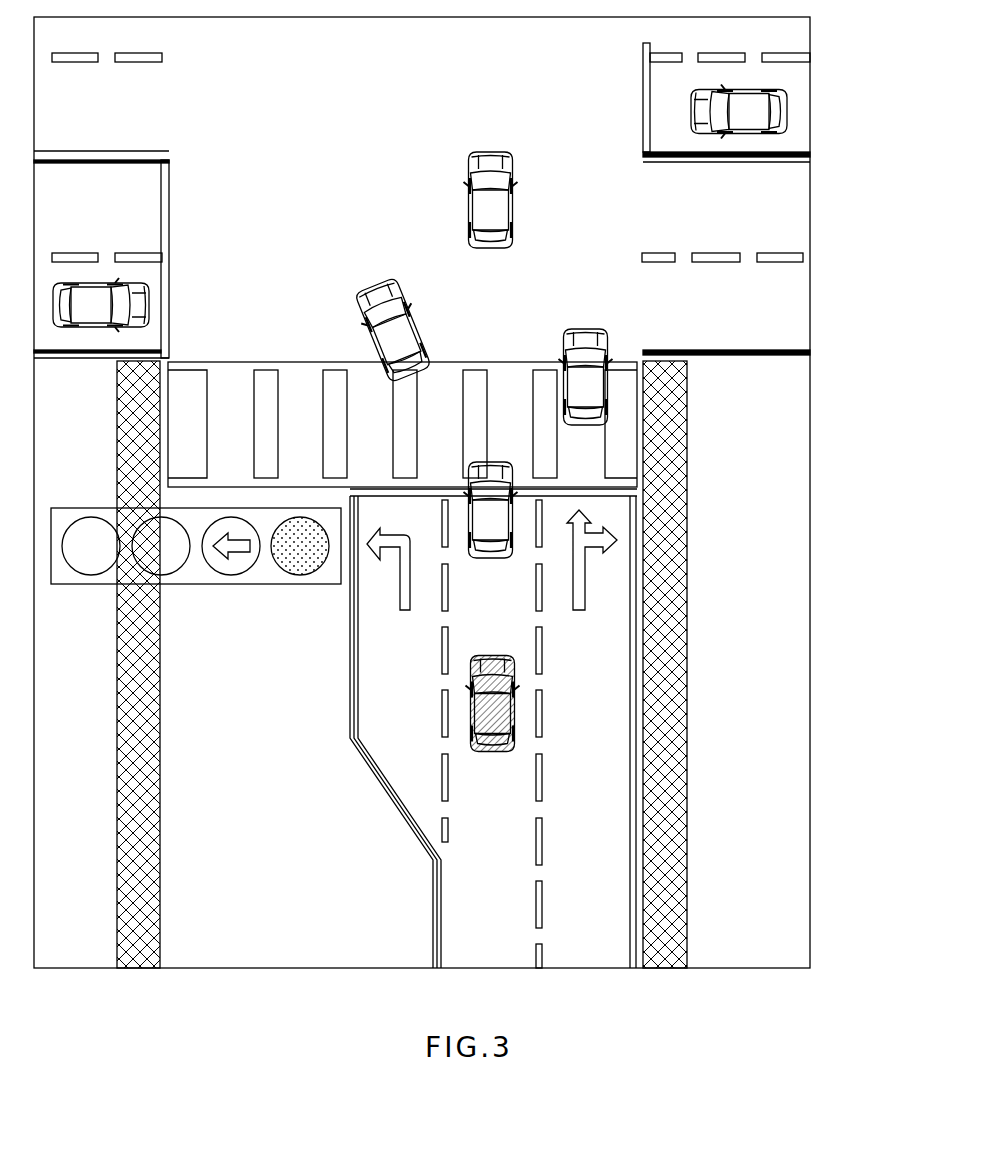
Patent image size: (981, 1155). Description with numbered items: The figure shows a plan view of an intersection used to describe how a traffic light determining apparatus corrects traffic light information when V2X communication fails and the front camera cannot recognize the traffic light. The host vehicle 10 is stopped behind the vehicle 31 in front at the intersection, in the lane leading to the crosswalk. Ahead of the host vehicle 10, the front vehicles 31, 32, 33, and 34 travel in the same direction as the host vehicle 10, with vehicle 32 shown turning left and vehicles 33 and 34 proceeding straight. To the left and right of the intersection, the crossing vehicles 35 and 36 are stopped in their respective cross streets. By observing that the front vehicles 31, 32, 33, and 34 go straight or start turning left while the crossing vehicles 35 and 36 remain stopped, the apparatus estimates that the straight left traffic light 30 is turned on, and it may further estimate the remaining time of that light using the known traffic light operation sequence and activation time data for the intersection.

The host vehicle 10 is at (493, 753).
The straight left traffic light 30 is at (298, 577).
The vehicle in front 31 is at (508, 560).
The front vehicle 32 is at (417, 325).
The front vehicle 33 is at (592, 323).
The front vehicle 34 is at (498, 150).
The crossing vehicle 35 is at (697, 93).
The crossing vehicle 36 is at (147, 285).